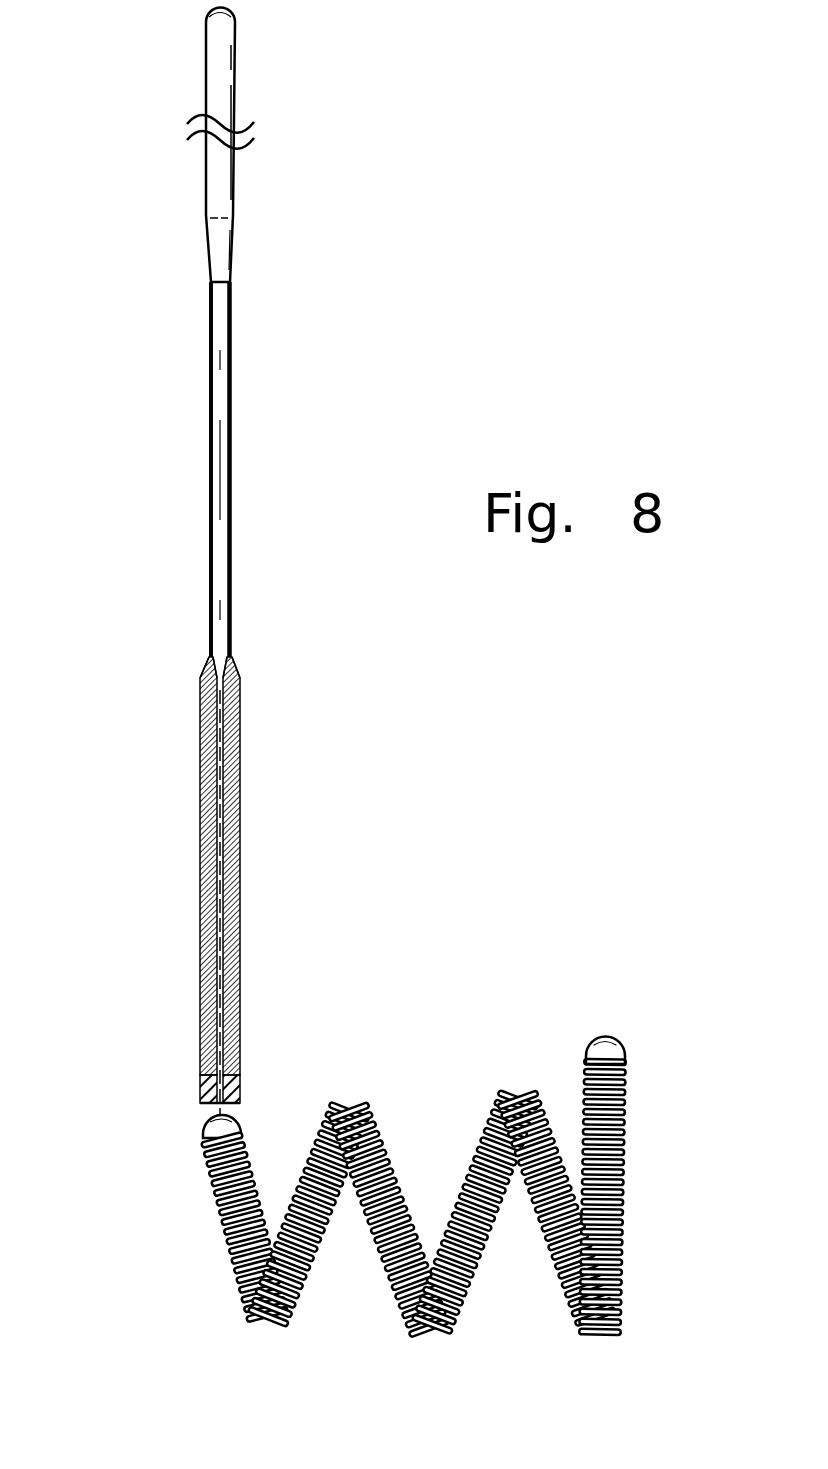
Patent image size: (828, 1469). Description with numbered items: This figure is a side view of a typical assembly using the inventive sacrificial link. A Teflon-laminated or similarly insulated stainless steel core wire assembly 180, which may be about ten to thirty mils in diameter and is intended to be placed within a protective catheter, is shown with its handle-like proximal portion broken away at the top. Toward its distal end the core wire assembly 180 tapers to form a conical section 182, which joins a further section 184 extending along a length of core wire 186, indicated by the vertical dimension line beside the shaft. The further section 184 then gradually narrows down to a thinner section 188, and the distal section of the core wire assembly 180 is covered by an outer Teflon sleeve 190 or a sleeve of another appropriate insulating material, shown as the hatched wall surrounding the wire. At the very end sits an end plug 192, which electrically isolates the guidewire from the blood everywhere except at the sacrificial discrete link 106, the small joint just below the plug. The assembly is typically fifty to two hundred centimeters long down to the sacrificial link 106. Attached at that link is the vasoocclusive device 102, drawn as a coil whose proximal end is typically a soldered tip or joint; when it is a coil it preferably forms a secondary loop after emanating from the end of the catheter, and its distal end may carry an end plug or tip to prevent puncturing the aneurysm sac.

The core wire assembly 180 is at (297, 161).
The conical section 182 is at (228, 252).
The further section 184 is at (233, 432).
The length of core wire 186 is at (163, 282).
The thinner section 188 is at (236, 890).
The outer Teflon sleeve 190 is at (232, 948).
The end plug 192 is at (200, 1083).
The sacrificial link 106 is at (222, 1105).
The vasoocclusive device 102 is at (642, 1174).